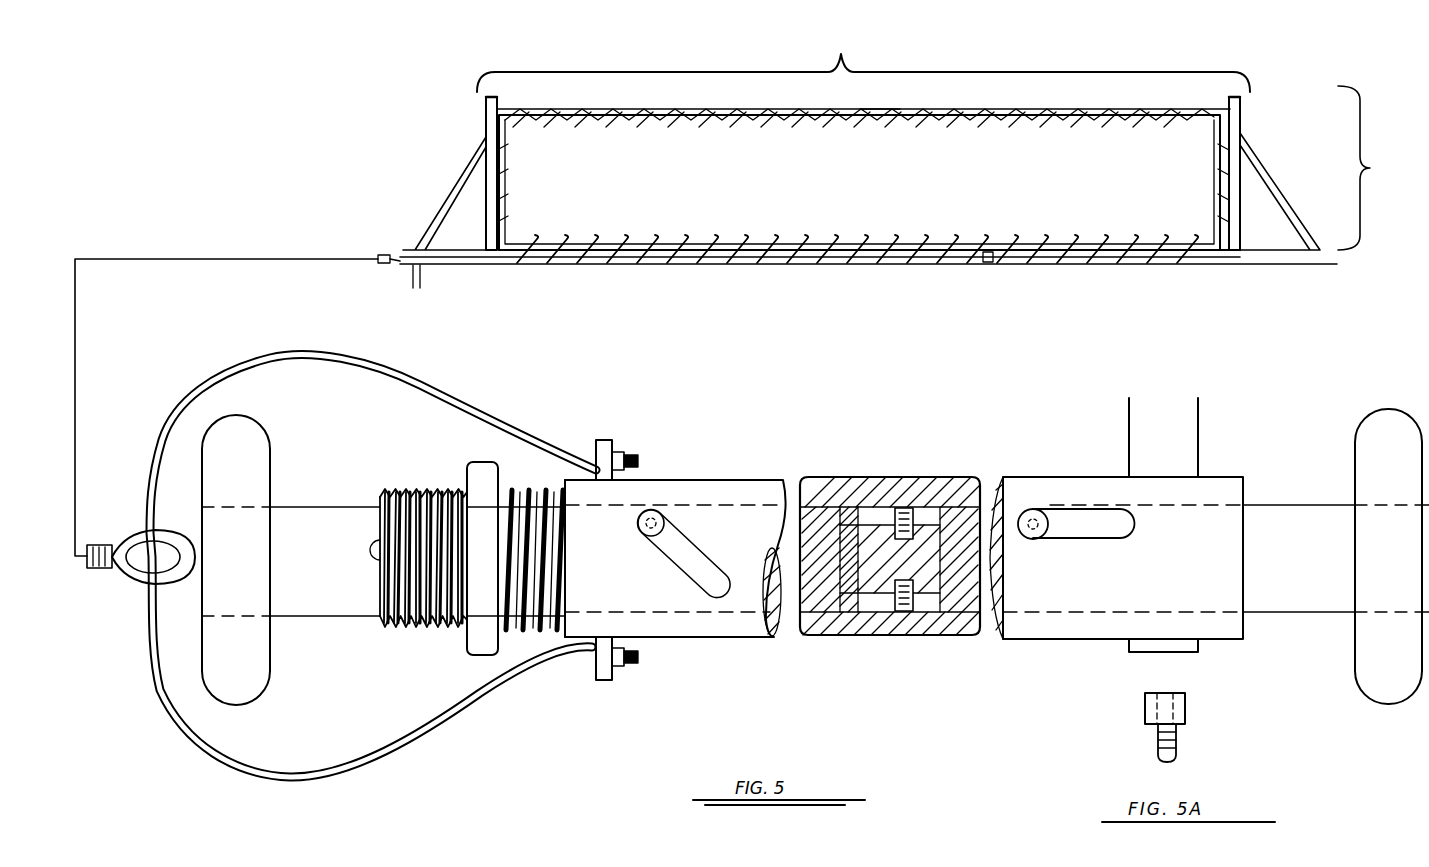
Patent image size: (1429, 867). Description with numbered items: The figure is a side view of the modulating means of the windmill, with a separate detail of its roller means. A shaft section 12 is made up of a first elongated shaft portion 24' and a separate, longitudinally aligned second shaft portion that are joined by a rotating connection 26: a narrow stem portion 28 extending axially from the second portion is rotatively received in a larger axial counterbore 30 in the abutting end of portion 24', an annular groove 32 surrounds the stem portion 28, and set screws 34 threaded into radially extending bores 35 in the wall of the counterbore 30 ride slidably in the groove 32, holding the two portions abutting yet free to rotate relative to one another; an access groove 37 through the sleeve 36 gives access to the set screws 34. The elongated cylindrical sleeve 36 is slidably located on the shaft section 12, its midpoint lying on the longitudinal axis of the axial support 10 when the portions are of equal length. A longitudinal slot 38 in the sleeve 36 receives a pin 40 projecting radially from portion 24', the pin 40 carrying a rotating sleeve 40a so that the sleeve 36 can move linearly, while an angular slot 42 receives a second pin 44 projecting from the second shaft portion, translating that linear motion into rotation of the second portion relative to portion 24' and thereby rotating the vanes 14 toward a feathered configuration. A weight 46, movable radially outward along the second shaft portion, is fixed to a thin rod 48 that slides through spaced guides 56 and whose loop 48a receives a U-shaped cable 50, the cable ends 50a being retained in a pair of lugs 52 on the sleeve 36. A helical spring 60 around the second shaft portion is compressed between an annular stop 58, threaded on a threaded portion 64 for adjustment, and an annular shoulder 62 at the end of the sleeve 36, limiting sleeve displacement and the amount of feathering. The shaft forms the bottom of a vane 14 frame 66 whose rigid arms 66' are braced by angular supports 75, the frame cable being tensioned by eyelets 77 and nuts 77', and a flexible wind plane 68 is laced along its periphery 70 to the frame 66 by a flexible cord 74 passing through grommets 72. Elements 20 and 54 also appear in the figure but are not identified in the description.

In FIG. 5, the axial support 10 is at (660, 118).
In FIG. 5, the shaft section 12 is at (1043, 270).
In FIG. 5, the vane 14 is at (1368, 168).
In FIG. 5, the handle 20 is at (272, 445).
In FIG. 5, the first elongated shaft portion 24' is at (680, 462).
In FIG. 5, the rotating connection 26 is at (903, 468).
In FIG. 5, the stem portion 28 is at (880, 635).
In FIG. 5, the axial counterbore 30 is at (948, 490).
In FIG. 5, the annular groove 32 is at (865, 505).
In FIG. 5, the set screws 34 is at (910, 508).
In FIG. 5, the radially extending bores 35 is at (952, 477).
In FIG. 5, the sleeve 36 is at (690, 640).
In FIG. 5, the access groove 37 is at (885, 477).
In FIG. 5, the longitudinal slot 38 is at (1090, 540).
In FIG. 5, the pin 40 is at (1040, 509).
In FIG. 5A, the pin 40 is at (1178, 740).
In FIG. 5A, the rotating sleeve 40a is at (1188, 700).
In FIG. 5, the angular slot 42 is at (675, 583).
In FIG. 5, the pin 44 is at (660, 512).
In FIG. 5, the weight 46 is at (988, 263).
In FIG. 5, the rod 48 is at (110, 570).
In FIG. 5, the loop 48a is at (130, 540).
In FIG. 5, the cable 50 is at (338, 778).
In FIG. 5, the cable ends 50a is at (632, 455).
In FIG. 5, the lugs 52 is at (600, 440).
In FIG. 5, the bolt 54 is at (614, 452).
In FIG. 5, the guides 56 is at (523, 262).
In FIG. 5, the annular stop 58 is at (478, 658).
In FIG. 5, the helical spring 60 is at (512, 633).
In FIG. 5, the annular shoulder 62 is at (560, 482).
In FIG. 5, the threaded portion 64 is at (407, 630).
In FIG. 5, the frame 66 is at (863, 64).
In FIG. 5, the rigid arms 66' is at (865, 195).
In FIG. 5, the wind plane 68 is at (859, 182).
In FIG. 5, the periphery 70 is at (1117, 118).
In FIG. 5, the grommets 72 is at (1110, 245).
In FIG. 5, the flexible cord 74 is at (1112, 262).
In FIG. 5, the angular supports 75 is at (452, 192).
In FIG. 5, the eyelets 77 is at (863, 165).
In FIG. 5, the nut 77' is at (866, 95).